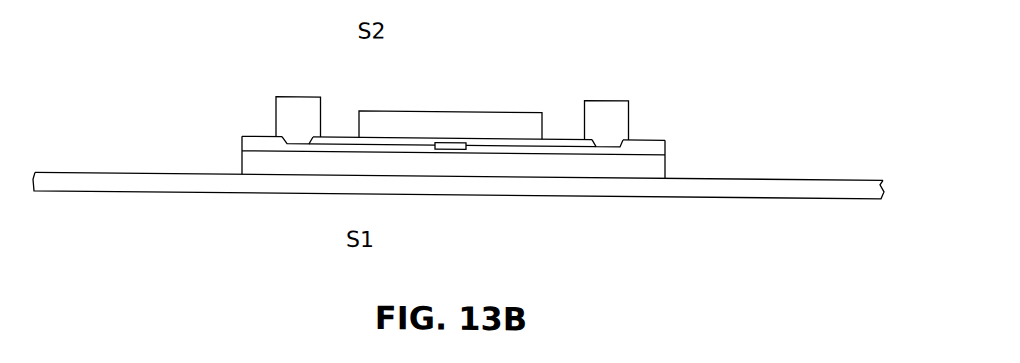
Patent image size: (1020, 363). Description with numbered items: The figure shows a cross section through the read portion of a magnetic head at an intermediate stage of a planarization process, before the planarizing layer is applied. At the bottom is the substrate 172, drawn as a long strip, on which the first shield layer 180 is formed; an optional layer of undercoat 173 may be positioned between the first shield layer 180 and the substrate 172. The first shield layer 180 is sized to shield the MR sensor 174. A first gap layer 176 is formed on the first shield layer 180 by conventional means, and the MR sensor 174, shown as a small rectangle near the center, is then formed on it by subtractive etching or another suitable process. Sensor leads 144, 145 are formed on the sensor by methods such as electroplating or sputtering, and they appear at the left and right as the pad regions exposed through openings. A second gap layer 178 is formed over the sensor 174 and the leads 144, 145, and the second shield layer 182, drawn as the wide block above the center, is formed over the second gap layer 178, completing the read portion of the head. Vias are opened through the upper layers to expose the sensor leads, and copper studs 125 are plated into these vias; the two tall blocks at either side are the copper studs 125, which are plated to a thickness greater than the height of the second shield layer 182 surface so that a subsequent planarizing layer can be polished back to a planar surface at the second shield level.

The copper studs 125 is at (293, 105).
The sensor lead 144 is at (297, 141).
The sensor lead 145 is at (607, 140).
The substrate 172 is at (128, 251).
The undercoat 173 is at (85, 176).
The MR sensor 174 is at (452, 142).
The first gap layer 176 is at (538, 141).
The second gap layer 178 is at (520, 138).
The first shield layer 180 is at (362, 162).
The second shield layer 182 is at (383, 114).